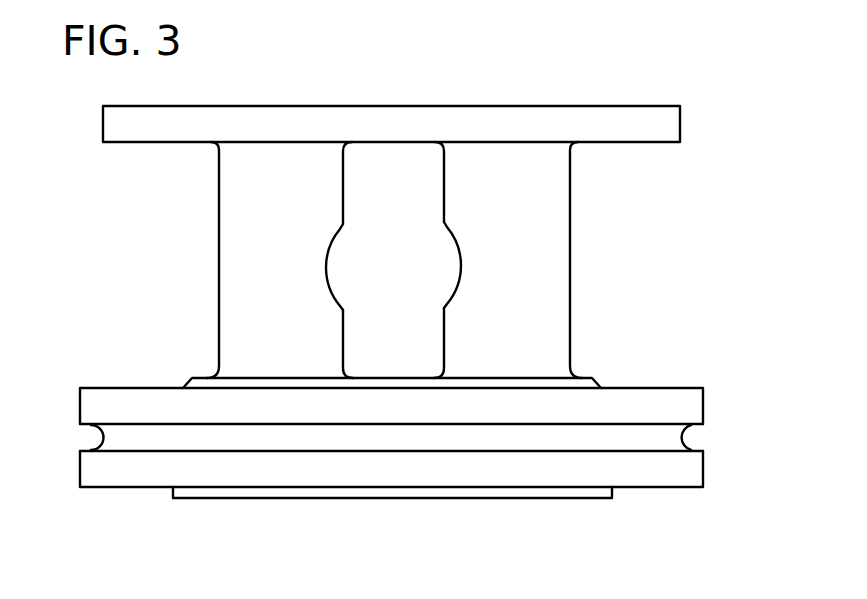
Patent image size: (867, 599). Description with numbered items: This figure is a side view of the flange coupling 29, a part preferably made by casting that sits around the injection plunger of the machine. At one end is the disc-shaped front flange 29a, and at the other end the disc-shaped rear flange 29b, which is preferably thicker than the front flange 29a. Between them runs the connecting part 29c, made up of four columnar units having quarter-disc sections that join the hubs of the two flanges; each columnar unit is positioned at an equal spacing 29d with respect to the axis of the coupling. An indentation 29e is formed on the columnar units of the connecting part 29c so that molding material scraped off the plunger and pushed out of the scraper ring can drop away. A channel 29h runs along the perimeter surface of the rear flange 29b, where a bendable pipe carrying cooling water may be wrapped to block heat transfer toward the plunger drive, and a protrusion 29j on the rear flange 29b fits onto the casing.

The flange coupling 29 is at (168, 268).
The front flange 29a is at (628, 113).
The rear flange 29b is at (655, 393).
The connecting part 29c is at (280, 153).
The equal spacing 29d is at (393, 148).
The indentation 29e is at (460, 264).
The channel 29h is at (688, 433).
The protrusion 29j is at (613, 490).